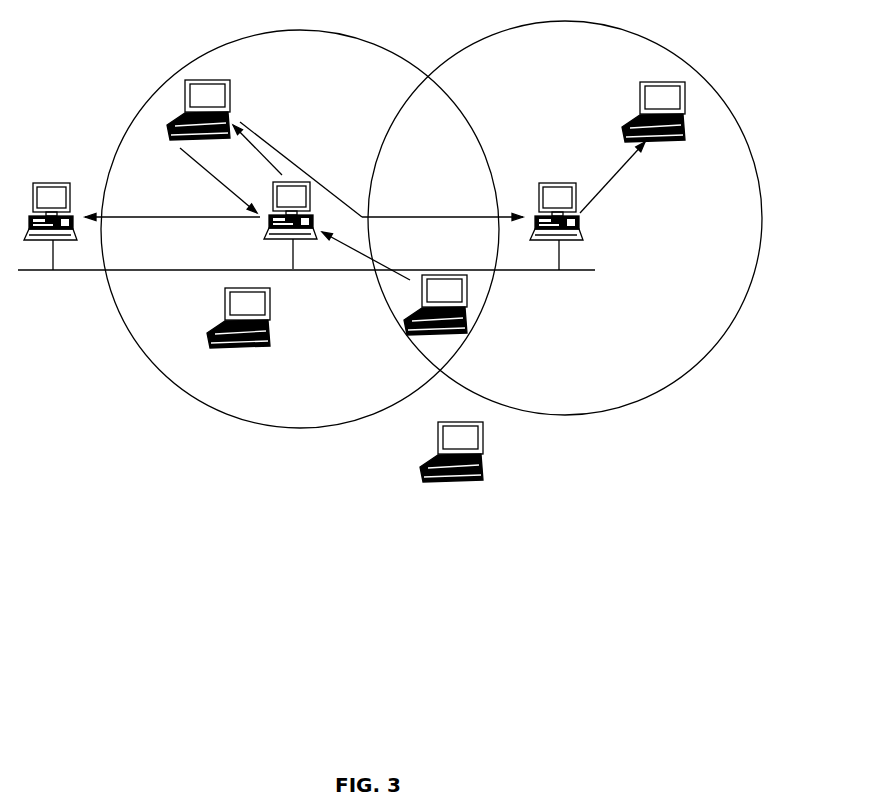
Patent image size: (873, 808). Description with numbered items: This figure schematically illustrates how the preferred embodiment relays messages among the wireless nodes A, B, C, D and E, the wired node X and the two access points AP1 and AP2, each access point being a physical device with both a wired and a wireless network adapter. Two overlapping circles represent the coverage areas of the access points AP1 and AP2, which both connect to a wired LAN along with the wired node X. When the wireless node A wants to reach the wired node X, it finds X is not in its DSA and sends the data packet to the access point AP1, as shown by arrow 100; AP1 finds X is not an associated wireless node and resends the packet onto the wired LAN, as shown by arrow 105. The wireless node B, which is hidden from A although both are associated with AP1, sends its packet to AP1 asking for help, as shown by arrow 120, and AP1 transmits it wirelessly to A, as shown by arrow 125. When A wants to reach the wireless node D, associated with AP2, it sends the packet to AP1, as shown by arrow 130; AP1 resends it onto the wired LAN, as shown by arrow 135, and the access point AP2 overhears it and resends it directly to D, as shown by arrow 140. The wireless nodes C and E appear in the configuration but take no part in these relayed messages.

The arrow 100 is at (210, 173).
The arrow 105 is at (163, 218).
The arrow 120 is at (383, 263).
The arrow 125 is at (255, 152).
The arrow 130 is at (292, 162).
The arrow 135 is at (400, 217).
The arrow 140 is at (617, 173).
The access point AP1 is at (270, 207).
The access point AP2 is at (560, 182).
The wireless node A is at (195, 110).
The wireless node B is at (430, 305).
The wireless node C is at (442, 452).
The wireless node D is at (645, 112).
The wireless node E is at (234, 318).
The wired node X is at (50, 210).